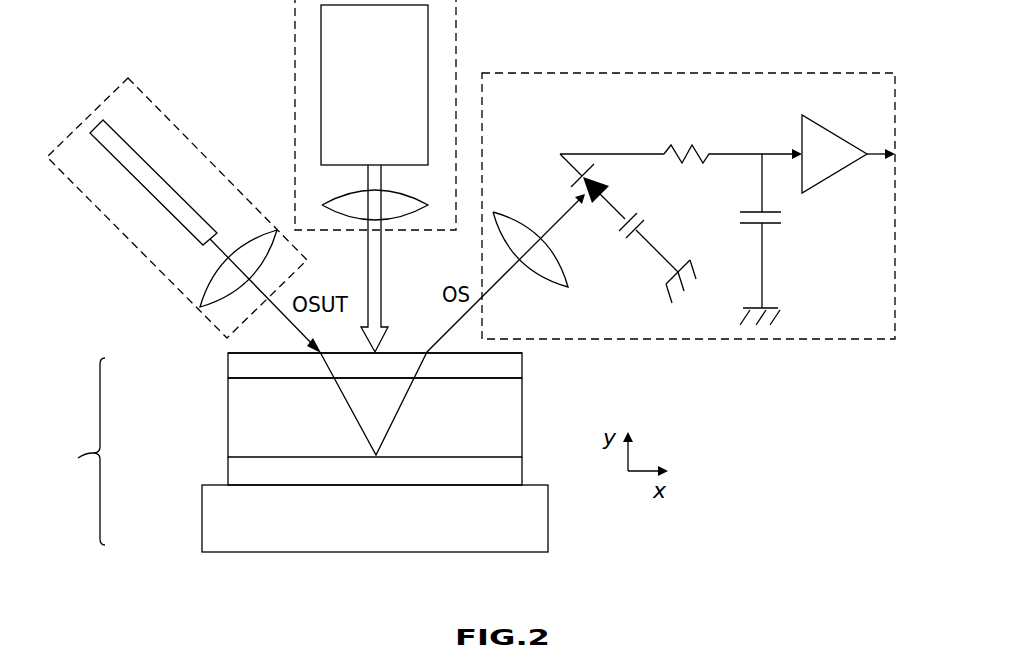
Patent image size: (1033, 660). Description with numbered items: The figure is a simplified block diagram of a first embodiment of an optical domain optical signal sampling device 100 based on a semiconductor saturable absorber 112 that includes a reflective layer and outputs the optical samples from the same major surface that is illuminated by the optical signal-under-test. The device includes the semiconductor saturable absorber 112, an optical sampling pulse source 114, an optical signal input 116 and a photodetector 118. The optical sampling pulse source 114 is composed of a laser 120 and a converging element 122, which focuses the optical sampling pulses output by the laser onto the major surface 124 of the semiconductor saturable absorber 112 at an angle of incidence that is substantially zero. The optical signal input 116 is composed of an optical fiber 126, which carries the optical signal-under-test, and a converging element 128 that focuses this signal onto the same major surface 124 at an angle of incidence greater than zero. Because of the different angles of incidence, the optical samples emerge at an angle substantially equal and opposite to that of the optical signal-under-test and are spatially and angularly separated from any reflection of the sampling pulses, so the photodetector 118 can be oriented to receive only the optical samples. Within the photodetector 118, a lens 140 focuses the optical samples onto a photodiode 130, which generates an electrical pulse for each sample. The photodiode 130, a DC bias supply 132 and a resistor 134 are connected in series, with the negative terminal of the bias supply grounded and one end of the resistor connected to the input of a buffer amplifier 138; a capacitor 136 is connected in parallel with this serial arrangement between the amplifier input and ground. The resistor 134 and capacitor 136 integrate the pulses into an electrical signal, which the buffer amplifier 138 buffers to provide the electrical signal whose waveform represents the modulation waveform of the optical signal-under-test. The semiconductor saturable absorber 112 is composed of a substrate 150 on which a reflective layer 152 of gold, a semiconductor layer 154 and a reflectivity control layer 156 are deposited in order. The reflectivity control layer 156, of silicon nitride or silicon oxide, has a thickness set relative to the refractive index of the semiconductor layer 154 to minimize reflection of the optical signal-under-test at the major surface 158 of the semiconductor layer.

The optical domain optical signal sampling device 100 is at (441, 276).
The semiconductor saturable absorber 112 is at (81, 451).
The optical sampling pulse source 114 is at (294, 34).
The optical signal input 116 is at (143, 92).
The photodetector 118 is at (800, 73).
The laser 120 is at (320, 76).
The converging element 122 is at (393, 200).
The major surface 124 is at (408, 352).
The optical fiber 126 is at (141, 158).
The converging element 128 is at (241, 246).
The photodiode 130 is at (600, 180).
The DC bias supply 132 is at (643, 228).
The resistor 134 is at (683, 149).
The capacitor 136 is at (770, 226).
The buffer amplifier 138 is at (833, 127).
The lens 140 is at (568, 285).
The substrate 150 is at (202, 519).
The reflective layer 152 is at (228, 474).
The semiconductor layer 154 is at (228, 414).
The reflectivity control layer 156 is at (228, 366).
The major surface 158 is at (510, 378).